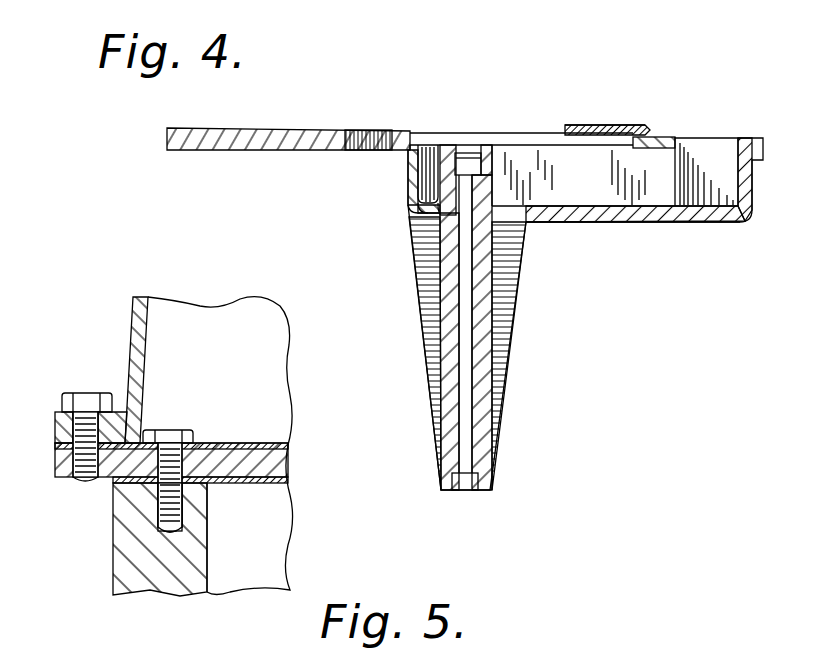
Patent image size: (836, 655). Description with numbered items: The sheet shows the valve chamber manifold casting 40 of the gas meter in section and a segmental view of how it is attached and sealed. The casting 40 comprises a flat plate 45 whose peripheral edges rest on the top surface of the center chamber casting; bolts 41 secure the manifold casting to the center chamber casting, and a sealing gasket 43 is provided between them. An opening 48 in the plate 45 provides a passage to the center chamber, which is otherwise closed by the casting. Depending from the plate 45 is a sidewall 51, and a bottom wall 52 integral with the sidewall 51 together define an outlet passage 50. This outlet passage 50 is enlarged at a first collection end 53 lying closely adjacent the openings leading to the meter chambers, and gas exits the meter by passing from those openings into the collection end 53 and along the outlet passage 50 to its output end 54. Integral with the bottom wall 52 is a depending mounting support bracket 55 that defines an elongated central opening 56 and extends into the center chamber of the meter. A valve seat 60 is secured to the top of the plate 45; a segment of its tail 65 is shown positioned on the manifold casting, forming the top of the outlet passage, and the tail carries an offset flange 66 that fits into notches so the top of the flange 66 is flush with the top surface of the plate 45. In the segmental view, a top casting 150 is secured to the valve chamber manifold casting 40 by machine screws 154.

In FIG. 5, the valve chamber manifold casting 40 is at (267, 440).
In FIG. 5, the bolts 41 is at (172, 430).
In FIG. 5, the sealing gasket 43 is at (268, 492).
In FIG. 4, the flat plate 45 is at (263, 128).
In FIG. 5, the flat plate 45 is at (280, 466).
In FIG. 4, the opening 48 is at (360, 129).
In FIG. 4, the outlet passage 50 is at (596, 186).
In FIG. 4, the sidewall 51 is at (412, 183).
In FIG. 4, the bottom wall 52 is at (572, 212).
In FIG. 4, the first collection end 53 is at (446, 152).
In FIG. 4, the output end 54 is at (725, 138).
In FIG. 4, the mounting support bracket 55 is at (482, 357).
In FIG. 4, the elongated central opening 56 is at (465, 278).
In FIG. 4, the valve seat 60 is at (583, 118).
In FIG. 4, the tail 65 is at (615, 124).
In FIG. 4, the offset flange 66 is at (668, 150).
In FIG. 5, the top casting 150 is at (147, 332).
In FIG. 5, the machine screws 154 is at (76, 393).